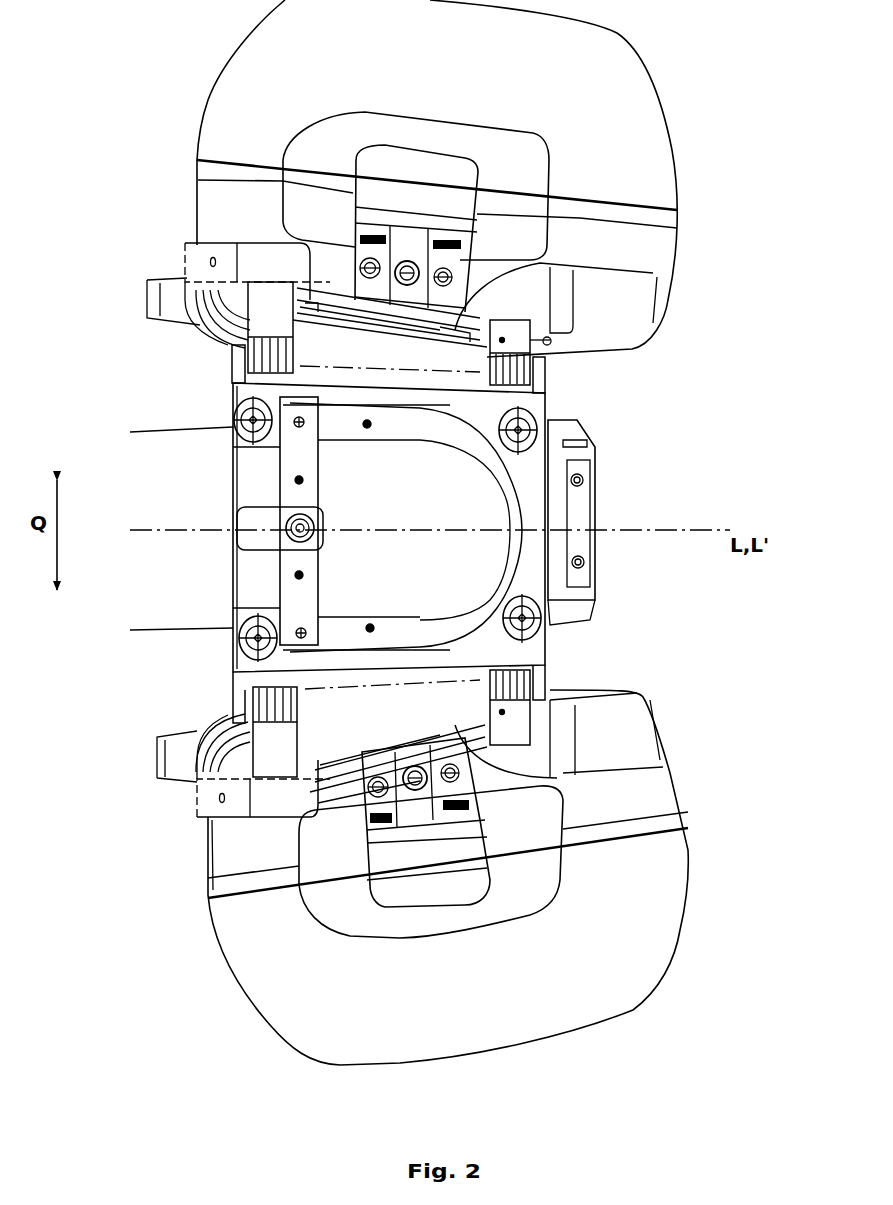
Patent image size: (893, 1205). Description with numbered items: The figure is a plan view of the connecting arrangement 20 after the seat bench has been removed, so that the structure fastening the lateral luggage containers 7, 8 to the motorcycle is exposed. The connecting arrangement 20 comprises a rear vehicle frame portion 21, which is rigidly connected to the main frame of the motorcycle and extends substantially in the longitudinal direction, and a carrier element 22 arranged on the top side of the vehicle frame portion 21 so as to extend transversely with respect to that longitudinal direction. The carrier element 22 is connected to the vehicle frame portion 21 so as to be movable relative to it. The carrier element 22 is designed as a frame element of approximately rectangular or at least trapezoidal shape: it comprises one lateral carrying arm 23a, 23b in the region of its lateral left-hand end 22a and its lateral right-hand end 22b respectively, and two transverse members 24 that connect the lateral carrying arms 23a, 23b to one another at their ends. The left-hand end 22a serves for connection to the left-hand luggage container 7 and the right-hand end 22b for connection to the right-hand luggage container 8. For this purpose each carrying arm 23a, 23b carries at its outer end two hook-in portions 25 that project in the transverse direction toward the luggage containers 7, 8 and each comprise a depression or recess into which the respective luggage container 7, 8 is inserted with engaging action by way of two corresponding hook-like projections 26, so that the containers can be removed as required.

The left-hand luggage container 7 is at (232, 940).
The right-hand luggage container 8 is at (228, 100).
The connecting arrangement 20 is at (686, 325).
The vehicle frame portion 21 is at (598, 494).
The carrier element 22 is at (555, 470).
The lateral left-hand end 22a is at (262, 670).
The lateral right-hand end 22b is at (246, 386).
The lateral carrying arm 23a is at (418, 655).
The lateral carrying arm 23b is at (405, 400).
The transverse member 24 is at (258, 484).
The hook-in portion 25 is at (234, 358).
The projection 26 is at (266, 336).